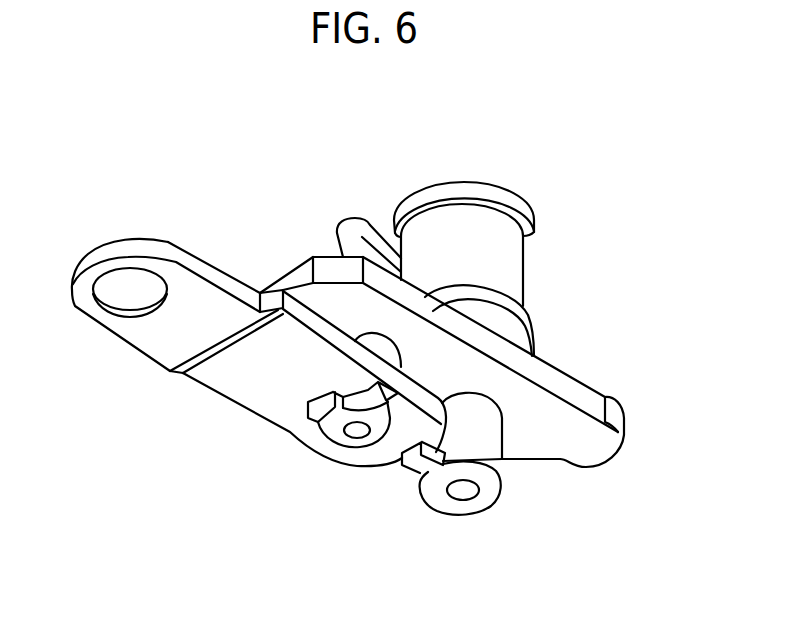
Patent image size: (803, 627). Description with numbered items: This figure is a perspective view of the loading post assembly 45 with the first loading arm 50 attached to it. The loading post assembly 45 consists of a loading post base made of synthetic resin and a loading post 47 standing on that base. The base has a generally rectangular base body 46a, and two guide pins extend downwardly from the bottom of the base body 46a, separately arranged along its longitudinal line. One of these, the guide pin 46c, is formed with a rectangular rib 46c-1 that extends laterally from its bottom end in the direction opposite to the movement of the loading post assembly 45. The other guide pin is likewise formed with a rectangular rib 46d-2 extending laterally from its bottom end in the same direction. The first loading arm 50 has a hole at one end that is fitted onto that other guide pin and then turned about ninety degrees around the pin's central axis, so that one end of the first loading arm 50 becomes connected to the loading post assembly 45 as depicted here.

The loading post assembly 45 is at (409, 345).
The base body 46a is at (548, 372).
The guide pin 46c is at (488, 459).
The rectangular rib 46c-1 is at (419, 468).
The rectangular rib 46d-2 is at (308, 419).
The loading post 47 is at (502, 186).
The first loading arm 50 is at (232, 264).